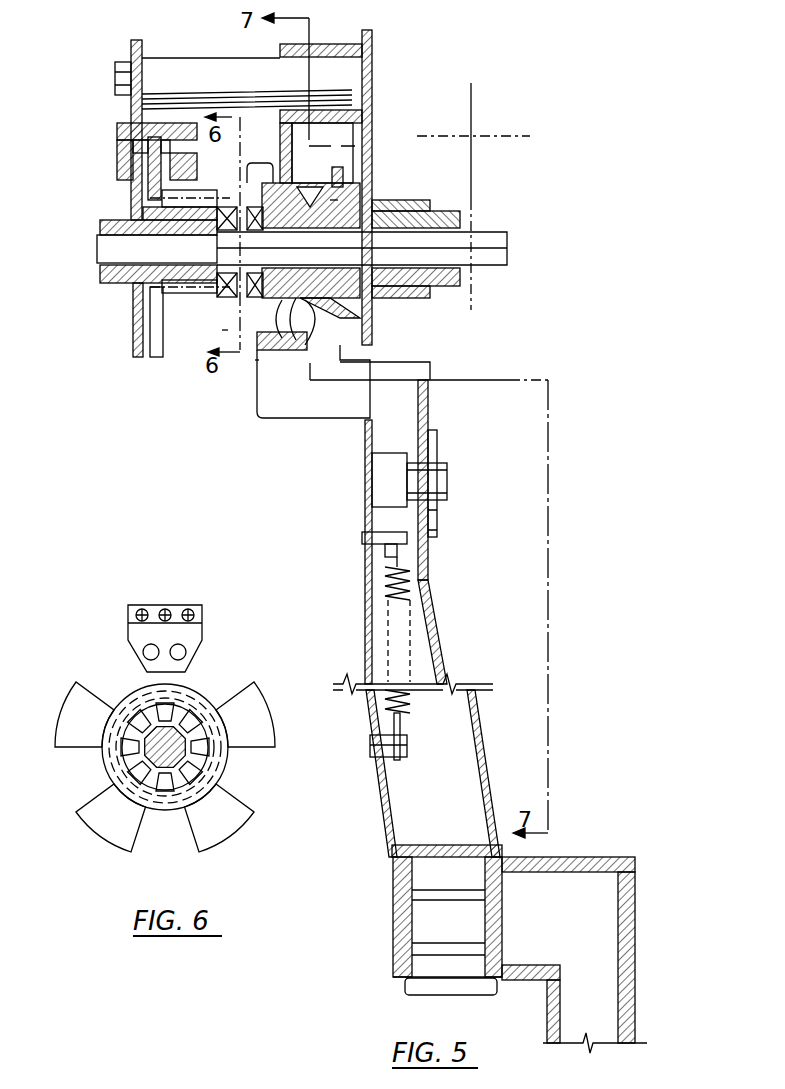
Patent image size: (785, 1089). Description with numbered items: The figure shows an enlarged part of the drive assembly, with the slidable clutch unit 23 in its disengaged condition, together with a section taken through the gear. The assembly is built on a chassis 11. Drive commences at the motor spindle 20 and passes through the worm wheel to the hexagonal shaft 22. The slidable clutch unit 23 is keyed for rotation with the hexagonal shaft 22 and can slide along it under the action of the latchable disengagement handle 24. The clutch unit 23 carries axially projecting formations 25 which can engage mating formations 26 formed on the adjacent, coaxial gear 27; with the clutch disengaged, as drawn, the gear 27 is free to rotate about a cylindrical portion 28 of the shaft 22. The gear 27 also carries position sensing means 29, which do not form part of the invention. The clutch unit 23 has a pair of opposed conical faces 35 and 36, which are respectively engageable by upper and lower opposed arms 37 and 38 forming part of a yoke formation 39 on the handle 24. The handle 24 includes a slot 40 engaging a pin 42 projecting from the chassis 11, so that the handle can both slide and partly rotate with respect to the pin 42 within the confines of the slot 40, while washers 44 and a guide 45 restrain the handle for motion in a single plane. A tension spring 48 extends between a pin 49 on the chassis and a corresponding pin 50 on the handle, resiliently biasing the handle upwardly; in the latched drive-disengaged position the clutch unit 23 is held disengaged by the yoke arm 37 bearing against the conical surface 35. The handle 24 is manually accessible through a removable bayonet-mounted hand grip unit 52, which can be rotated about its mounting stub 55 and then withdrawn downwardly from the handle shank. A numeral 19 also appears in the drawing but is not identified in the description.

In FIG. 5, the chassis 11 is at (373, 88).
In FIG. 5, the bearing retainer 19 is at (223, 332).
In FIG. 5, the motor spindle 20 is at (478, 133).
In FIG. 5, the hexagonal shaft 22 is at (500, 240).
In FIG. 6, the hexagonal shaft 22 is at (160, 755).
In FIG. 5, the slidable clutch unit 23 is at (283, 347).
In FIG. 5, the latchable disengagement handle 24 is at (415, 373).
In FIG. 5, the axially projecting formations 25 is at (300, 215).
In FIG. 5, the mating formations 26 is at (175, 283).
In FIG. 6, the mating formations 26 is at (192, 775).
In FIG. 5, the gear 27 is at (172, 282).
In FIG. 6, the gear 27 is at (183, 800).
In FIG. 5, the cylindrical portion 28 is at (130, 243).
In FIG. 6, the position sensing means 29 is at (248, 700).
In FIG. 5, the conical face 35 is at (327, 332).
In FIG. 5, the conical face 36 is at (297, 350).
In FIG. 5, the upper arm 37 is at (340, 197).
In FIG. 5, the lower arm 38 is at (257, 362).
In FIG. 5, the yoke formation 39 is at (270, 370).
In FIG. 5, the slot 40 is at (430, 520).
In FIG. 5, the pin 42 is at (385, 480).
In FIG. 5, the washers 44 is at (430, 453).
In FIG. 5, the guide 45 is at (283, 148).
In FIG. 5, the tension spring 48 is at (395, 622).
In FIG. 5, the pin 49 is at (380, 540).
In FIG. 5, the pin 50 is at (395, 762).
In FIG. 5, the hand grip unit 52 is at (605, 1003).
In FIG. 5, the mounting stub 55 is at (430, 925).